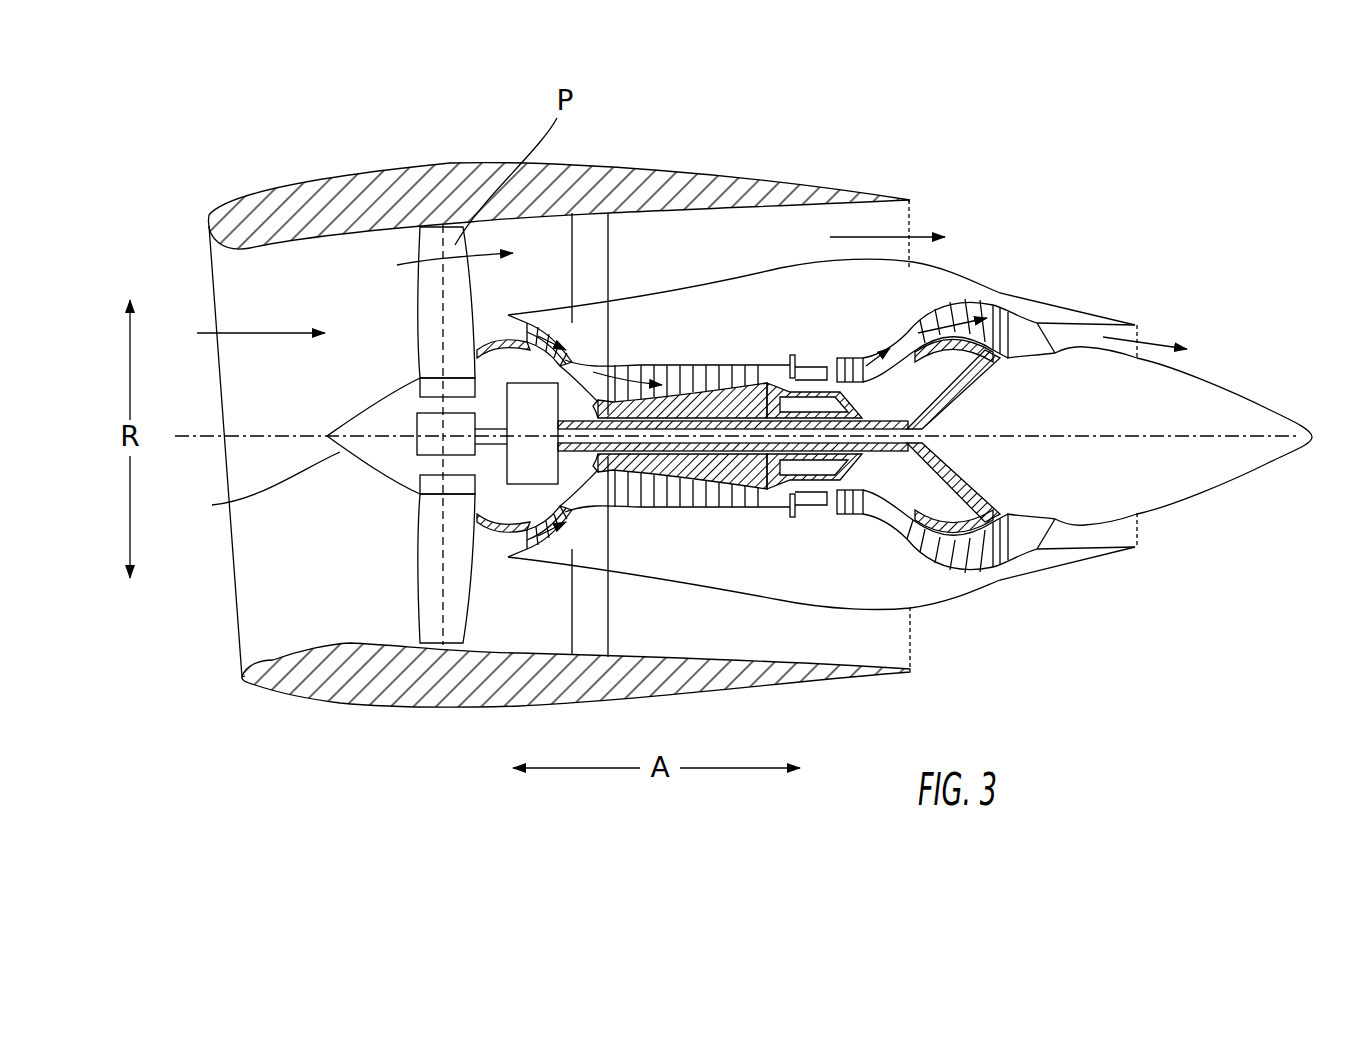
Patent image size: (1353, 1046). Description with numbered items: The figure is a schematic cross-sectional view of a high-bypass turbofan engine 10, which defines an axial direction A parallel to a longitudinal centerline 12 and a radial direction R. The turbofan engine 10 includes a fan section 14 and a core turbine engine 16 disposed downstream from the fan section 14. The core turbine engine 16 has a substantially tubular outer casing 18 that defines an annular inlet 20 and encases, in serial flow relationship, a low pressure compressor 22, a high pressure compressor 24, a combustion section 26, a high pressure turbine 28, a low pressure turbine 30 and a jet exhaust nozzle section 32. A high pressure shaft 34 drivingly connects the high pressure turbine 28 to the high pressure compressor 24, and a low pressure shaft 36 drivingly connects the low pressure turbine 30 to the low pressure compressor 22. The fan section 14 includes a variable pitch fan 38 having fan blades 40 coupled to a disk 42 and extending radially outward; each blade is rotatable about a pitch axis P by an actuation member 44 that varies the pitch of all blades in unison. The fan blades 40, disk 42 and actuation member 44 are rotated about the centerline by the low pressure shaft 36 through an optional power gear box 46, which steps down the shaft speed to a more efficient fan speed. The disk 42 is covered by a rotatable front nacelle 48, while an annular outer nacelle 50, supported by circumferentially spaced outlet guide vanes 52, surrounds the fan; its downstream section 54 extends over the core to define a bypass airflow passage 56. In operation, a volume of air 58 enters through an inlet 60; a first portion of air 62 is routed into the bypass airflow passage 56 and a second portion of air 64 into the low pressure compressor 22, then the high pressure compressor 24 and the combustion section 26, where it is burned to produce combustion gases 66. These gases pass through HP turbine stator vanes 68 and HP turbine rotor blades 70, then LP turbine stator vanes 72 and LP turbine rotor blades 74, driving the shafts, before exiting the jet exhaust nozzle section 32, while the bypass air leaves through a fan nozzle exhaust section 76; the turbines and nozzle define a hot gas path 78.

The turbofan engine 10 is at (1053, 178).
The longitudinal centerline 12 is at (1077, 432).
The fan section 14 is at (378, 250).
The core turbine engine 16 is at (728, 318).
The outer casing 18 is at (768, 598).
The annular inlet 20 is at (510, 545).
The low pressure compressor 22 is at (560, 504).
The high pressure compressor 24 is at (637, 488).
The combustion section 26 is at (808, 497).
The high pressure turbine 28 is at (876, 506).
The low pressure turbine 30 is at (993, 568).
The jet exhaust nozzle section 32 is at (1053, 546).
The high pressure shaft 34 is at (833, 407).
The low pressure shaft 36 is at (920, 400).
The variable pitch fan 38 is at (387, 486).
The fan blades 40 is at (415, 583).
The disk 42 is at (415, 376).
The actuation member 44 is at (417, 420).
The power gear box 46 is at (547, 398).
The front nacelle 48 is at (260, 487).
The outer nacelle 50 is at (467, 708).
The outlet guide vanes 52 is at (610, 245).
The downstream section 54 is at (853, 190).
The bypass airflow passage 56 is at (784, 252).
The volume of air 58 is at (258, 330).
The inlet 60 is at (238, 652).
The first portion of air 62 is at (873, 232).
The second portion of air 64 is at (493, 328).
The combustion gases 66 is at (853, 362).
The HP turbine stator vanes 68 is at (812, 505).
The HP turbine rotor blades 70 is at (845, 493).
The LP turbine stator vanes 72 is at (917, 547).
The LP turbine rotor blades 74 is at (927, 556).
The fan nozzle exhaust section 76 is at (900, 222).
The hot gas path 78 is at (897, 341).